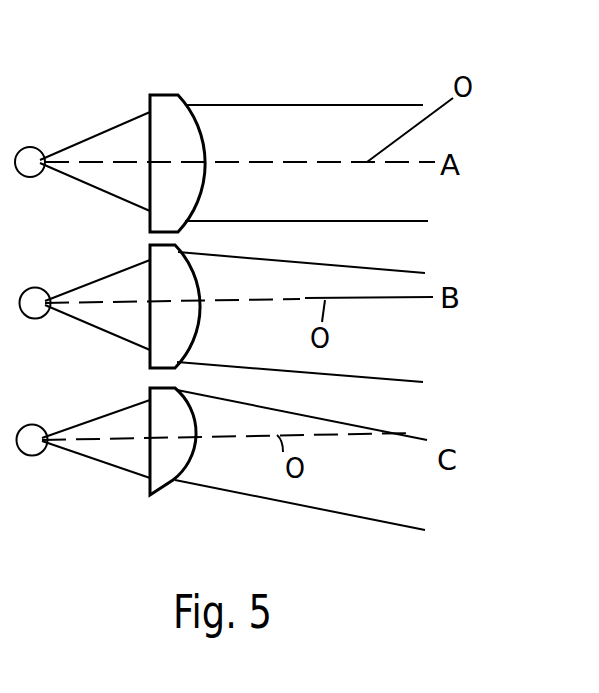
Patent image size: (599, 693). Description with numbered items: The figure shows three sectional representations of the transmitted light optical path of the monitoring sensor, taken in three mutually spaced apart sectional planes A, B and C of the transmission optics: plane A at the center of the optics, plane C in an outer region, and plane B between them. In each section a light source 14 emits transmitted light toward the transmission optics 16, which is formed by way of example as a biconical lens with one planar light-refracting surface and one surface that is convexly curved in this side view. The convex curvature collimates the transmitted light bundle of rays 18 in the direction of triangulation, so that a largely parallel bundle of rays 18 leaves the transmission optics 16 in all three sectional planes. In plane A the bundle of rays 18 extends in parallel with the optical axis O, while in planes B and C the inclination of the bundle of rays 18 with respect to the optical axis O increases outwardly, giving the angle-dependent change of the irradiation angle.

The light source 14 is at (24, 162).
The transmission optics 16 is at (163, 120).
The transmitted light bundle of rays 18 is at (295, 183).